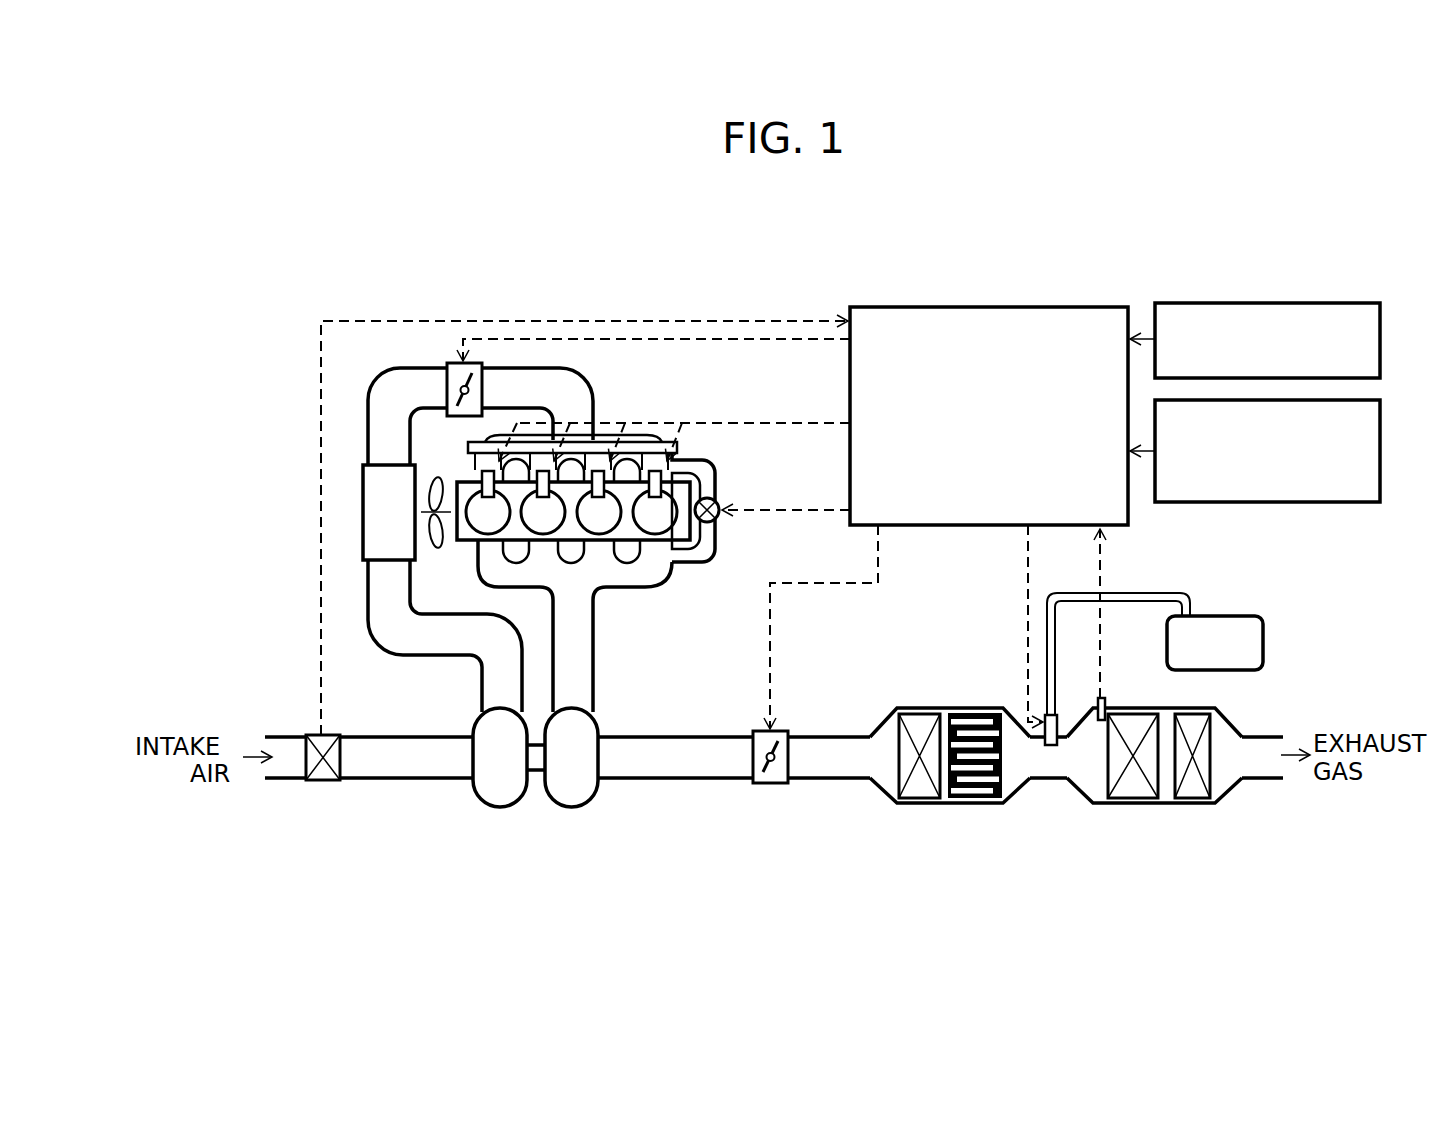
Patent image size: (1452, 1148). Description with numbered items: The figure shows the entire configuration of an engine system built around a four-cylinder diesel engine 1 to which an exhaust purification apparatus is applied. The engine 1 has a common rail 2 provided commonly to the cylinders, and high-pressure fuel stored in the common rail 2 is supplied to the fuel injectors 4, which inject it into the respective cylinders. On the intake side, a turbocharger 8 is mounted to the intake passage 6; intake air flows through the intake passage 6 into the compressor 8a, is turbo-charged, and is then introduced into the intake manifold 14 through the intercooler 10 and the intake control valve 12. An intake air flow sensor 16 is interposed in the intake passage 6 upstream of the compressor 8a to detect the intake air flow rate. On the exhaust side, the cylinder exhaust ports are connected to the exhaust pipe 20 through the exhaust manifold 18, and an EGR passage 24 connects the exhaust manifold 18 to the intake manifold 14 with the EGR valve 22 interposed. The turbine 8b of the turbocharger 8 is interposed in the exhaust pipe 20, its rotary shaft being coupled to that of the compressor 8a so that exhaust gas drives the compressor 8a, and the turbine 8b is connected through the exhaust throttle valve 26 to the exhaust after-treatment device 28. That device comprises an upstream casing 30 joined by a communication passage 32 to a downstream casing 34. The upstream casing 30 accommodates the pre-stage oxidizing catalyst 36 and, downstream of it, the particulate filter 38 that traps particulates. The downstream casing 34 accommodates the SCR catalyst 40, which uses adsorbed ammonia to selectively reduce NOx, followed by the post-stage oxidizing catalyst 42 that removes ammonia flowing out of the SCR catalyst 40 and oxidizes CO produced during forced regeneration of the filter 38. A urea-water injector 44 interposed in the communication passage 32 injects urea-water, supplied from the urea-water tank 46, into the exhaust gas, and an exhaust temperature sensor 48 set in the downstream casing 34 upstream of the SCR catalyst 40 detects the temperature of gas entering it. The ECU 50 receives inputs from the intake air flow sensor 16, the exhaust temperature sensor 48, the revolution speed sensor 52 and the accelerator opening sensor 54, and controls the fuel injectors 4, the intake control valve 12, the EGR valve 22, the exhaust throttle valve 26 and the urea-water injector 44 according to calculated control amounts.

The engine 1 is at (676, 268).
The common rail 2 is at (551, 543).
The fuel injectors 4 is at (533, 513).
The intake passage 6 is at (400, 768).
The turbocharger 8 is at (535, 794).
The compressor 8a is at (493, 792).
The turbine 8b is at (577, 792).
The intercooler 10 is at (366, 497).
The intake control valve 12 is at (459, 357).
The intake manifold 14 is at (477, 465).
The intake air flow sensor 16 is at (324, 781).
The exhaust manifold 18 is at (614, 580).
The exhaust pipe 20 is at (673, 768).
The EGR valve 22 is at (718, 503).
The EGR passage 24 is at (722, 507).
The exhaust throttle valve 26 is at (762, 785).
The exhaust after-treatment device 28 is at (1056, 806).
The upstream casing 30 is at (950, 789).
The communication passage 32 is at (1050, 762).
The downstream casing 34 is at (1154, 789).
The pre-stage oxidizing catalyst 36 is at (910, 796).
The particulate filter 38 is at (983, 794).
The SCR catalyst 40 is at (1127, 793).
The post-stage oxidizing catalyst 42 is at (1198, 793).
The urea-water injector 44 is at (1054, 718).
The urea-water tank 46 is at (1235, 616).
The exhaust temperature sensor 48 is at (1105, 700).
The ECU 50 is at (888, 307).
The revolution speed sensor 52 is at (1381, 310).
The accelerator opening sensor 54 is at (1381, 408).